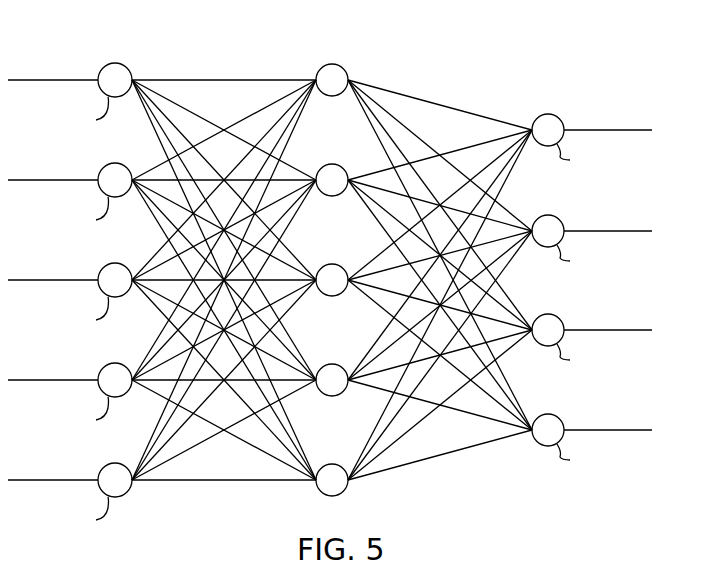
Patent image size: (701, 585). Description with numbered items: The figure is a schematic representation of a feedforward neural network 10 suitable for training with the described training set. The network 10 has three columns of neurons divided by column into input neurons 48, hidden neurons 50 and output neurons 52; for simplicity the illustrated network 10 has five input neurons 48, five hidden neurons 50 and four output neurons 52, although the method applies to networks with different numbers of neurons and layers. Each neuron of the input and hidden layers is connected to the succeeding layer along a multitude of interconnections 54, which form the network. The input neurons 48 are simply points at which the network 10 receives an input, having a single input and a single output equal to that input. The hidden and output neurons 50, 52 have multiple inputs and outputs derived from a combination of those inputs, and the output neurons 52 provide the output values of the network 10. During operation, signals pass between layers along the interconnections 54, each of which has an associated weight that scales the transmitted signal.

The feedforward neural network 10 is at (608, 58).
The input neurons 48 is at (126, 63).
The hidden neurons 50 is at (348, 73).
The output neurons 52 is at (541, 116).
The interconnections 54 is at (160, 451).